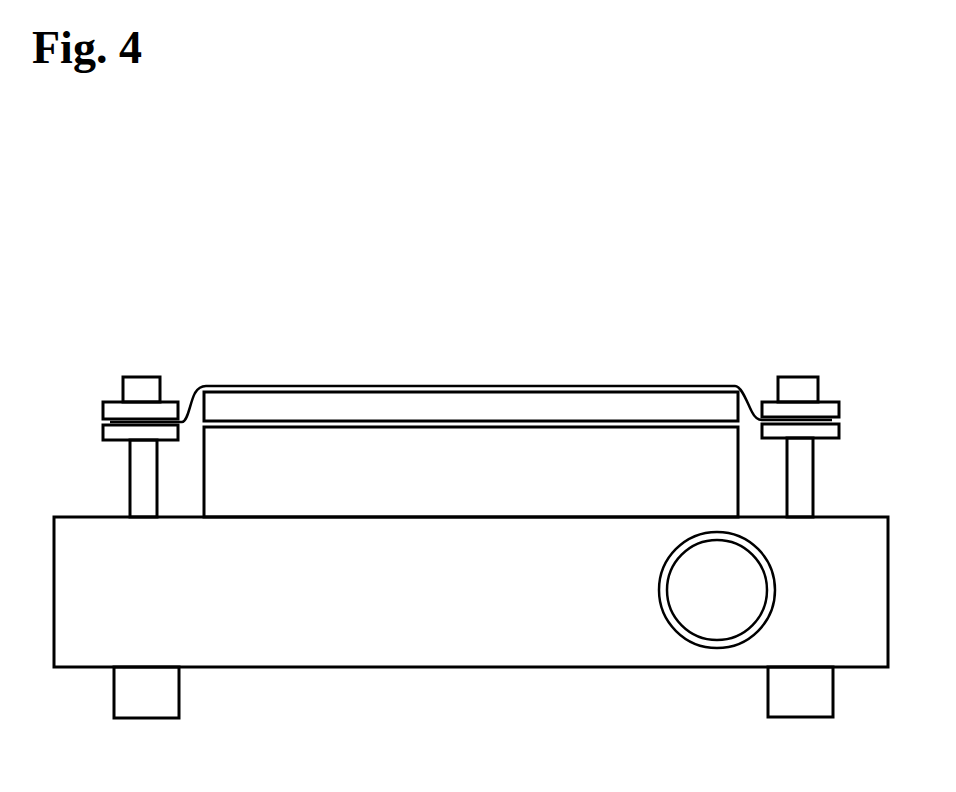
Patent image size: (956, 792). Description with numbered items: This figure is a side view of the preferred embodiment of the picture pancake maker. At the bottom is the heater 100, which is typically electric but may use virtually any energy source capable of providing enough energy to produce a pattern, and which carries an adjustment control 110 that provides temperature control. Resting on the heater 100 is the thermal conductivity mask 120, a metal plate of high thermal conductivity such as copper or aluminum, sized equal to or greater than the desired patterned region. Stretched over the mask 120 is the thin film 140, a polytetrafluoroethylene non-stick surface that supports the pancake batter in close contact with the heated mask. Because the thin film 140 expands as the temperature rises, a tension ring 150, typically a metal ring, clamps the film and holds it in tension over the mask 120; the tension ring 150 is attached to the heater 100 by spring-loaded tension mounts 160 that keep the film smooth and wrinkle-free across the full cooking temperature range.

The heater 100 is at (471, 572).
The adjustment control 110 is at (718, 647).
The thermal conductivity mask 120 is at (471, 405).
The thin film 140 is at (385, 385).
The tension ring 150 is at (110, 403).
The tension mount 160 is at (143, 480).